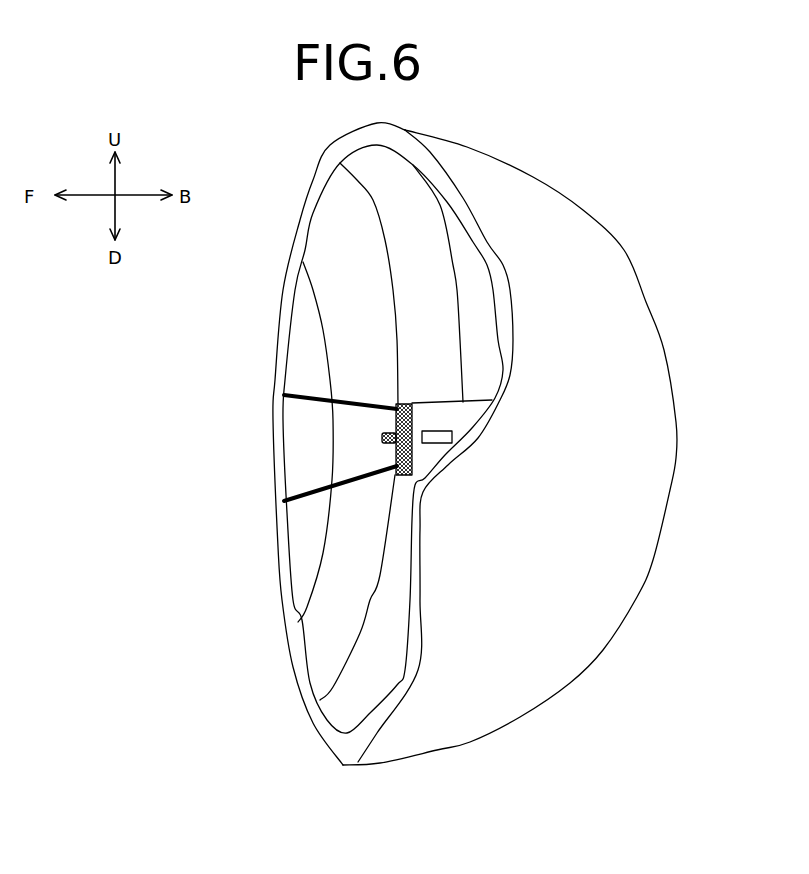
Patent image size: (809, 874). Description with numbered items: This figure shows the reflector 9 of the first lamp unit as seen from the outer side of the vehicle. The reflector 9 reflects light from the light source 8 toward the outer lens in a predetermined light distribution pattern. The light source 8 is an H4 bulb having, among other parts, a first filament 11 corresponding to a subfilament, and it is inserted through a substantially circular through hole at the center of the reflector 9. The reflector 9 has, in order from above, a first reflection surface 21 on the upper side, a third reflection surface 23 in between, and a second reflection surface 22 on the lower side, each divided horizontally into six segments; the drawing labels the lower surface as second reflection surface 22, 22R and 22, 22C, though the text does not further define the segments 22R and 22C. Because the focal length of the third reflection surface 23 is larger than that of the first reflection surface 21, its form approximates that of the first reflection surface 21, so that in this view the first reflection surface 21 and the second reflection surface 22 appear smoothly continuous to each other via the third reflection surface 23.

The reflector 9 is at (623, 256).
The light source 8 is at (428, 402).
The first filament 11 is at (447, 432).
The first reflection surface 21 is at (303, 290).
The second reflection surface 22 is at (275, 501).
The right front glass 22R is at (340, 550).
The center front glass 22C is at (345, 707).
The third reflection surface 23 is at (347, 435).